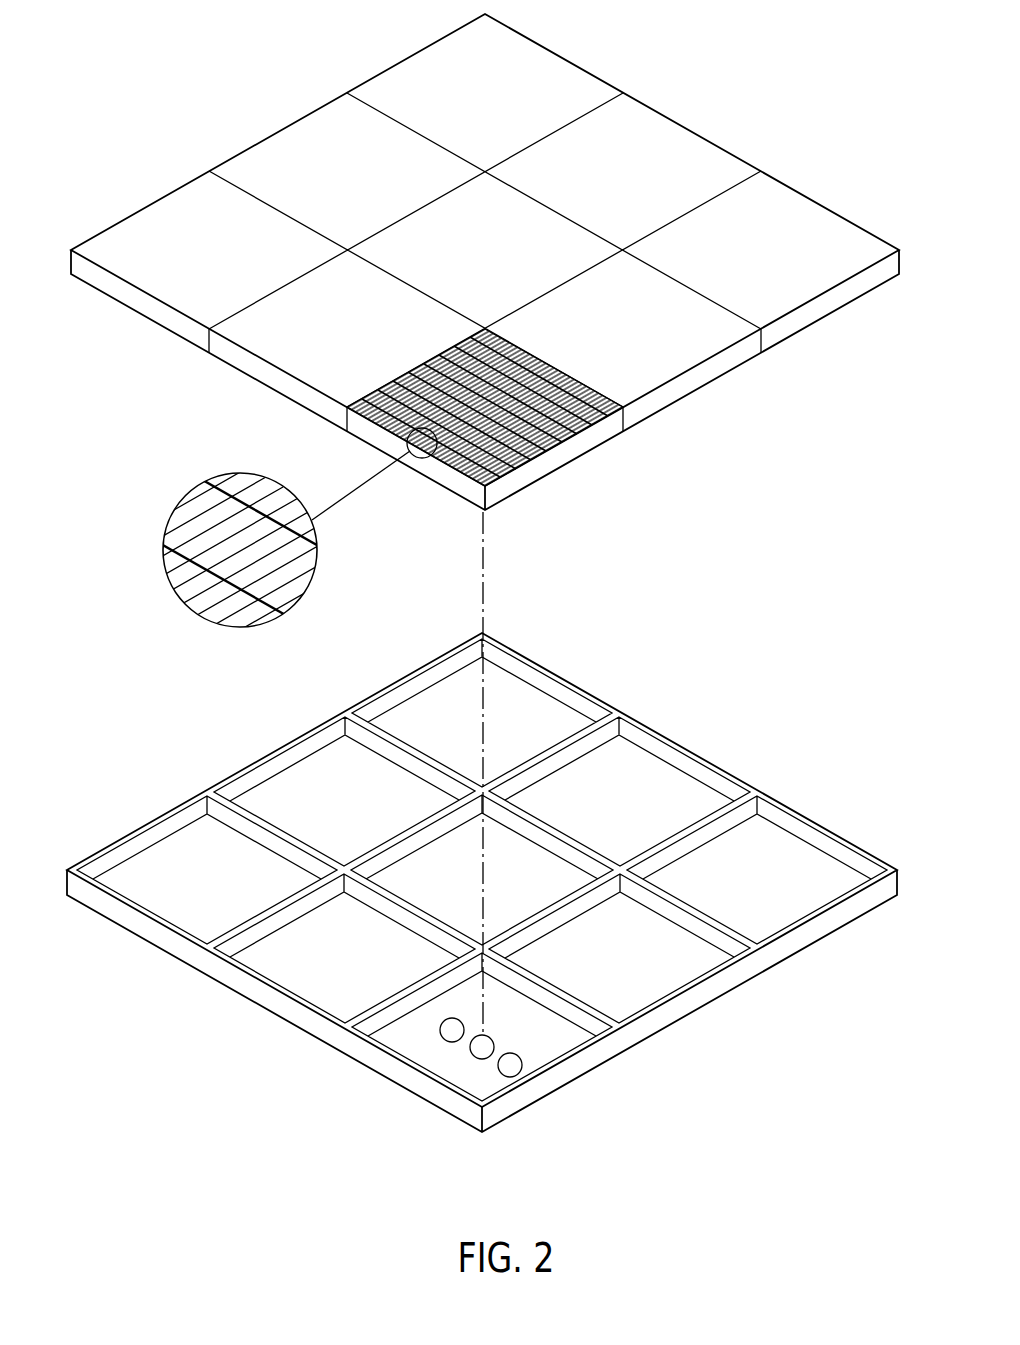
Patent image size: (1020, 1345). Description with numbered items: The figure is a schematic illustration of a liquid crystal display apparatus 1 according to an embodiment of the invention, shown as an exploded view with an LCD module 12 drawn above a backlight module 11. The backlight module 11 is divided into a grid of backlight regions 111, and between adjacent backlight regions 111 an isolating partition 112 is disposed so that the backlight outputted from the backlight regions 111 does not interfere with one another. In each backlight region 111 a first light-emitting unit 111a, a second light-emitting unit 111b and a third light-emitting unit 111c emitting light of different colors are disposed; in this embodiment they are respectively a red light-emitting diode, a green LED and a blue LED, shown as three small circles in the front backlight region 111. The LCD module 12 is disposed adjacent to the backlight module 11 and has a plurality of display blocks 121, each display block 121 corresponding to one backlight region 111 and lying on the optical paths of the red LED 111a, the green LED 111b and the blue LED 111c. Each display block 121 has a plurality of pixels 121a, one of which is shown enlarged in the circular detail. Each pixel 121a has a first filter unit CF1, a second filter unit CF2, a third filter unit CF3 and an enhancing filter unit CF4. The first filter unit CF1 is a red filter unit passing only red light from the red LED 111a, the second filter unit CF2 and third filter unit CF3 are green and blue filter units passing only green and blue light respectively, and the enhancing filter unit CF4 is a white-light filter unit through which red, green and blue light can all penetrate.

The liquid crystal display apparatus 1 is at (131, 35).
The LCD module 12 is at (485, 277).
The display block 121 is at (547, 465).
The pixel 121a is at (227, 560).
The first filter unit CF1 is at (220, 637).
The second filter unit CF2 is at (227, 558).
The third filter unit CF3 is at (201, 572).
The enhancing filter unit CF4 is at (221, 513).
The backlight module 11 is at (482, 908).
The backlight region 111 is at (482, 911).
The first light-emitting unit 111a is at (446, 1032).
The second light-emitting unit 111b is at (475, 1050).
The third light-emitting unit 111c is at (503, 1066).
The isolating partition 112 is at (745, 937).